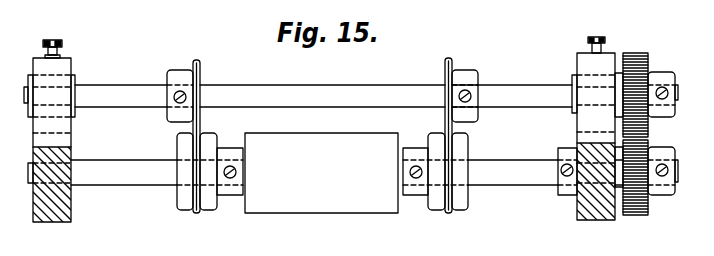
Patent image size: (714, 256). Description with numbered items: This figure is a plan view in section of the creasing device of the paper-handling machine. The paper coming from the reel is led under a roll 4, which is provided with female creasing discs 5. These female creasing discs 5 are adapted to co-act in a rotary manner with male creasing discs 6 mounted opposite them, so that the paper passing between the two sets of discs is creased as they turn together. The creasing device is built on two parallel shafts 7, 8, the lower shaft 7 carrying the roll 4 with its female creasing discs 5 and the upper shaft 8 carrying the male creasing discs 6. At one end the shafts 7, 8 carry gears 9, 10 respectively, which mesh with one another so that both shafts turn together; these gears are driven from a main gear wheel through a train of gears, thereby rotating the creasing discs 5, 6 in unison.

The roll 4 is at (378, 200).
The female creasing discs 5 is at (185, 205).
The male creasing discs 6 is at (196, 62).
The shaft of the creasing device 7 is at (512, 178).
The shaft of the creasing device 8 is at (520, 102).
The gear 9 is at (647, 215).
The gear 10 is at (648, 55).